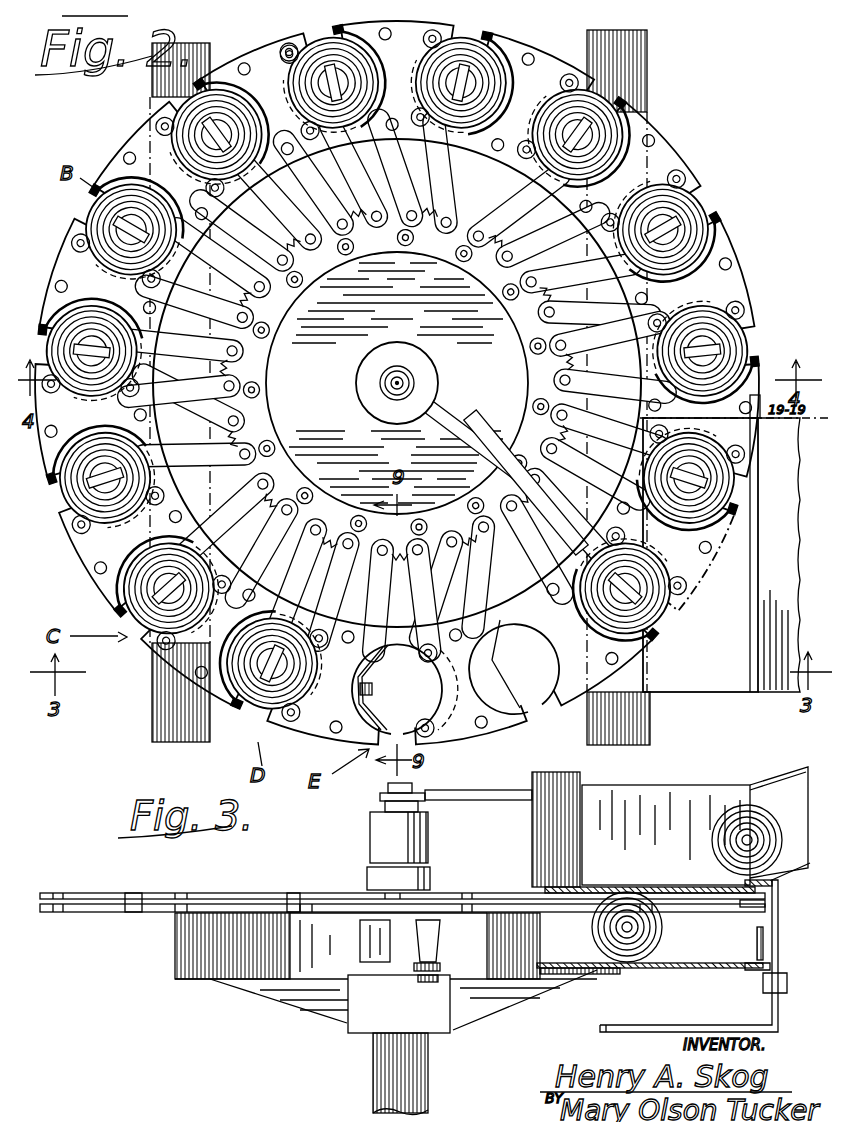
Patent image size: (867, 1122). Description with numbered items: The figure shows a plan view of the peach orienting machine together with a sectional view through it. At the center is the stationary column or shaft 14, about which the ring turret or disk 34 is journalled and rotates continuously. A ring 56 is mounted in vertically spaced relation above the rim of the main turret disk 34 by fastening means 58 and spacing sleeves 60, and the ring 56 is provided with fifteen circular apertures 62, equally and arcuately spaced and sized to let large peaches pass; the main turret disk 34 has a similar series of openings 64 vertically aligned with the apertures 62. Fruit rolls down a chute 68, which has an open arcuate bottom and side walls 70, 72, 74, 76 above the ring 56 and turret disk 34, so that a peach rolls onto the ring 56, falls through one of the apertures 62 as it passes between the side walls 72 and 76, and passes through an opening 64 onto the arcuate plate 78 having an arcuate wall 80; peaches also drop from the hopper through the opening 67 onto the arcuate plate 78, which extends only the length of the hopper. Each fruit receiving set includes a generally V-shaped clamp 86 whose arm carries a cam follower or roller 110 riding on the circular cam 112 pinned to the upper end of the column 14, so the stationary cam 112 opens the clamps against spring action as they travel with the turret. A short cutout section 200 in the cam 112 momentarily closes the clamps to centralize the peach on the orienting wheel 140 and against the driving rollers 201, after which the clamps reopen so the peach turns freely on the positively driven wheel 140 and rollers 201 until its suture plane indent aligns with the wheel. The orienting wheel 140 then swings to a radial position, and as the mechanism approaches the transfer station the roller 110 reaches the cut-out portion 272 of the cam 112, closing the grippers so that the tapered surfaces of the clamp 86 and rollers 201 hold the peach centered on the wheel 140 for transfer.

In FIG. 2, the column or shaft 14 is at (412, 352).
In FIG. 3, the ring turret or disk 34 is at (84, 914).
In FIG. 2, the ring 56 is at (732, 224).
In FIG. 3, the ring 56 is at (42, 893).
In FIG. 2, the fastening means 58 is at (96, 578).
In FIG. 3, the spacing sleeve 60 is at (186, 904).
In FIG. 2, the apertures 62 is at (645, 652).
In FIG. 2, the openings or apertures 64 is at (283, 50).
In FIG. 3, the opening 67 is at (600, 892).
In FIG. 2, the chute 68 is at (758, 692).
In FIG. 2, the side wall 70 is at (706, 692).
In FIG. 2, the side wall 72 is at (514, 667).
In FIG. 2, the side wall 74 is at (565, 512).
In FIG. 3, the side wall 74 is at (576, 828).
In FIG. 2, the side wall 76 is at (760, 395).
In FIG. 3, the side wall 76 is at (655, 790).
In FIG. 2, the arcuate plate 78 is at (779, 555).
In FIG. 3, the arcuate plate 78 is at (672, 970).
In FIG. 3, the arcuate wall 80 is at (766, 952).
In FIG. 3, the V-shaped clamp 86 is at (360, 947).
In FIG. 2, the cam follower or roller 110 is at (355, 506).
In FIG. 2, the circular cam 112 is at (268, 414).
In FIG. 2, the orienting wheel 140 is at (702, 186).
In FIG. 2, the cutout section 200 is at (545, 387).
In FIG. 3, the driving roller 201 is at (440, 940).
In FIG. 2, the cut-out portion 272 is at (420, 515).